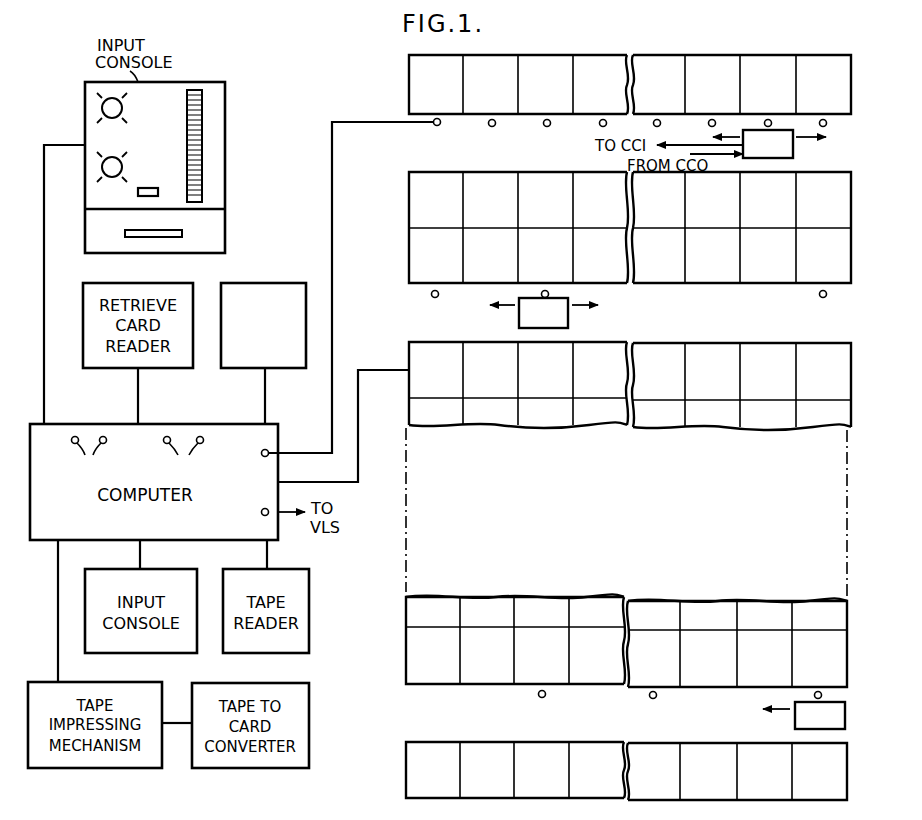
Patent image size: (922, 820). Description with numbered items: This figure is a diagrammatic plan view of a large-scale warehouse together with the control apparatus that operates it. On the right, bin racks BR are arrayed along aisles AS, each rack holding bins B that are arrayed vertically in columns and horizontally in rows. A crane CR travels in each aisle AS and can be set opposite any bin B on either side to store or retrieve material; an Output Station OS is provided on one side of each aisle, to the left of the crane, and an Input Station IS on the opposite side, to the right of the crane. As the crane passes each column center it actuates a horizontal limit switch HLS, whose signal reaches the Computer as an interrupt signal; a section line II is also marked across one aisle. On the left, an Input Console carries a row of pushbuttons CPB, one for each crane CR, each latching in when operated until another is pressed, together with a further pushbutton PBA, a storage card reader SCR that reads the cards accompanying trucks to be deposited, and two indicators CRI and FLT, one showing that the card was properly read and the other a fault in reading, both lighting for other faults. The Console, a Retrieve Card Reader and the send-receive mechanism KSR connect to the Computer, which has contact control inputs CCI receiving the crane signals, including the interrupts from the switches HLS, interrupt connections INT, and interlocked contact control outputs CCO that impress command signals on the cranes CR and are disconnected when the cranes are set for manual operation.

The indicator CRI is at (122, 106).
The pushbuttons CPB is at (187, 122).
The indicator FLT is at (122, 165).
The push button PBA is at (146, 188).
The storage card reader SCR is at (182, 233).
The send-receive mechanism KSR is at (263, 325).
The contact control outputs CCO is at (90, 456).
The contact control inputs CCI is at (184, 456).
The interface INT is at (262, 456).
The output station OS is at (628, 371).
The input station IS is at (628, 486).
The aisle AS is at (464, 149).
The horizontal limit switch HLS is at (495, 125).
The crane CR is at (667, 429).
The bins B is at (842, 218).
The bin racks BR is at (884, 531).
The section line II is at (435, 155).